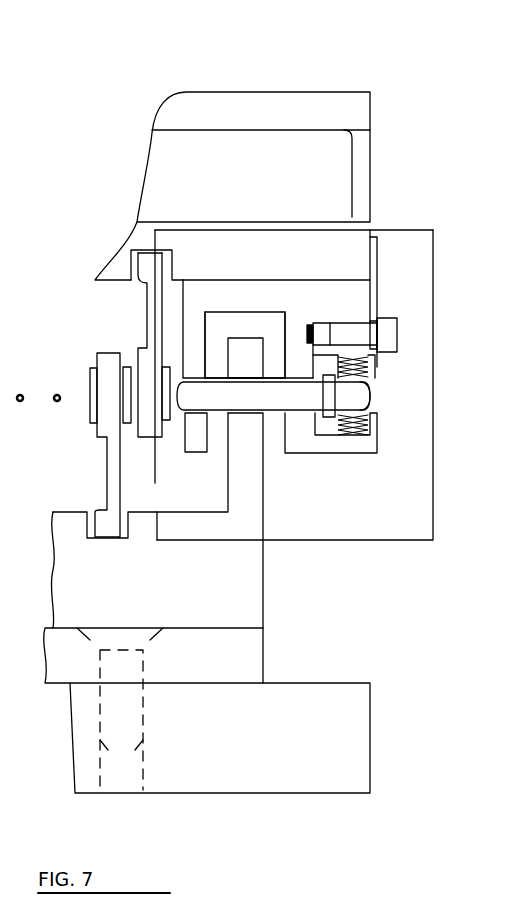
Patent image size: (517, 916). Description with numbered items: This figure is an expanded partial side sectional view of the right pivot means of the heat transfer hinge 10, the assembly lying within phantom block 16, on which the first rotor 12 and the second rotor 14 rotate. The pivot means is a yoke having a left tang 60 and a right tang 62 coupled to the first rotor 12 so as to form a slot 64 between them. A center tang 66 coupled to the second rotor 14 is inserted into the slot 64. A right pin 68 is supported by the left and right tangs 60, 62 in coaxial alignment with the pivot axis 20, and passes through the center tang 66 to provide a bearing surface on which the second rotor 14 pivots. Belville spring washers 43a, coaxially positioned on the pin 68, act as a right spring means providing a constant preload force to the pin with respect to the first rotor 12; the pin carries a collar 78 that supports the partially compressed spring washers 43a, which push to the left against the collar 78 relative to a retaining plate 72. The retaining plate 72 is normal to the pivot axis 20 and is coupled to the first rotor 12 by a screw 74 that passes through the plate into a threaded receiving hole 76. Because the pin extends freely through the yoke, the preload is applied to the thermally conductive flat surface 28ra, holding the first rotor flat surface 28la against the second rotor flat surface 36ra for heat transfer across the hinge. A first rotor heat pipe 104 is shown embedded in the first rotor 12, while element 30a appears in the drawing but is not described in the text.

The heat transfer hinge 10 is at (223, 84).
The first rotor heat pipe 104 is at (276, 175).
The retaining plate 72 is at (378, 260).
The first rotor 12 is at (300, 265).
The second rotor flat surface 36ra is at (130, 368).
The first rotor flat surface 28la is at (130, 378).
The left tang 60 is at (195, 372).
The right tang 62 is at (294, 372).
The slot 64 is at (284, 326).
The threaded receiving hole 76 is at (316, 328).
The screw 74 is at (383, 320).
The right pin 68 is at (226, 406).
The collar 78 is at (365, 396).
The Belville spring washers 43a is at (368, 376).
The pivot axis 20 is at (370, 398).
The center tang 66 is at (259, 471).
The thermally conductive flat surface 28ra is at (175, 428).
The disc carrier 30a is at (148, 438).
The phantom block (right pivot means) 16 is at (337, 517).
The second rotor 14 is at (231, 595).